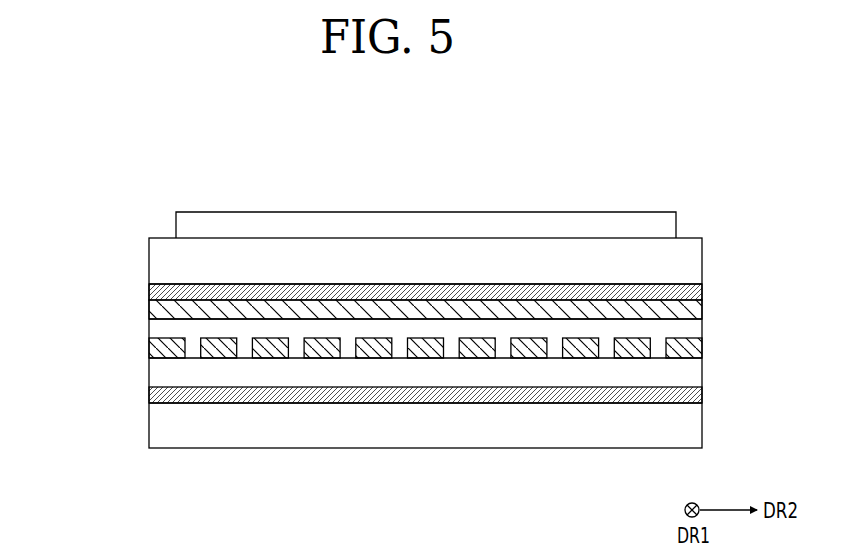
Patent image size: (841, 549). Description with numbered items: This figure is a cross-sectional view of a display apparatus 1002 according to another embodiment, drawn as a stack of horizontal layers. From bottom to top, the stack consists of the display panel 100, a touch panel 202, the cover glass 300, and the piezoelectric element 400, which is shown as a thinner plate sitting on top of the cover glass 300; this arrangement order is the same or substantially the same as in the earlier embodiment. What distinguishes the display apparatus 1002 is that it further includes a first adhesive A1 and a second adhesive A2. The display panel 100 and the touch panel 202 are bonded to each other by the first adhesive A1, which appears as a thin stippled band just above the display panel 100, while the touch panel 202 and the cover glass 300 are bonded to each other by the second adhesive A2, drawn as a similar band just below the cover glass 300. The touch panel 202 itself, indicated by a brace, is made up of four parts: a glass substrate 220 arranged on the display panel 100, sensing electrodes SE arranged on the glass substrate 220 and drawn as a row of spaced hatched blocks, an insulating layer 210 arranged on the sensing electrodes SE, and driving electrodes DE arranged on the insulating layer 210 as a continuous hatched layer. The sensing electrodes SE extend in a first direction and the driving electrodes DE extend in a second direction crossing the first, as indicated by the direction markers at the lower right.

The display apparatus 1002 is at (642, 160).
The piezoelectric element 400 is at (188, 223).
The cover glass 300 is at (158, 262).
The second adhesive A2 is at (702, 290).
The driving electrodes DE is at (153, 307).
The insulating layer 210 is at (158, 328).
The sensing electrodes SE is at (155, 350).
The glass substrate 220 is at (158, 372).
The touch panel 202 is at (72, 305).
The first adhesive A1 is at (702, 395).
The display panel 100 is at (158, 427).